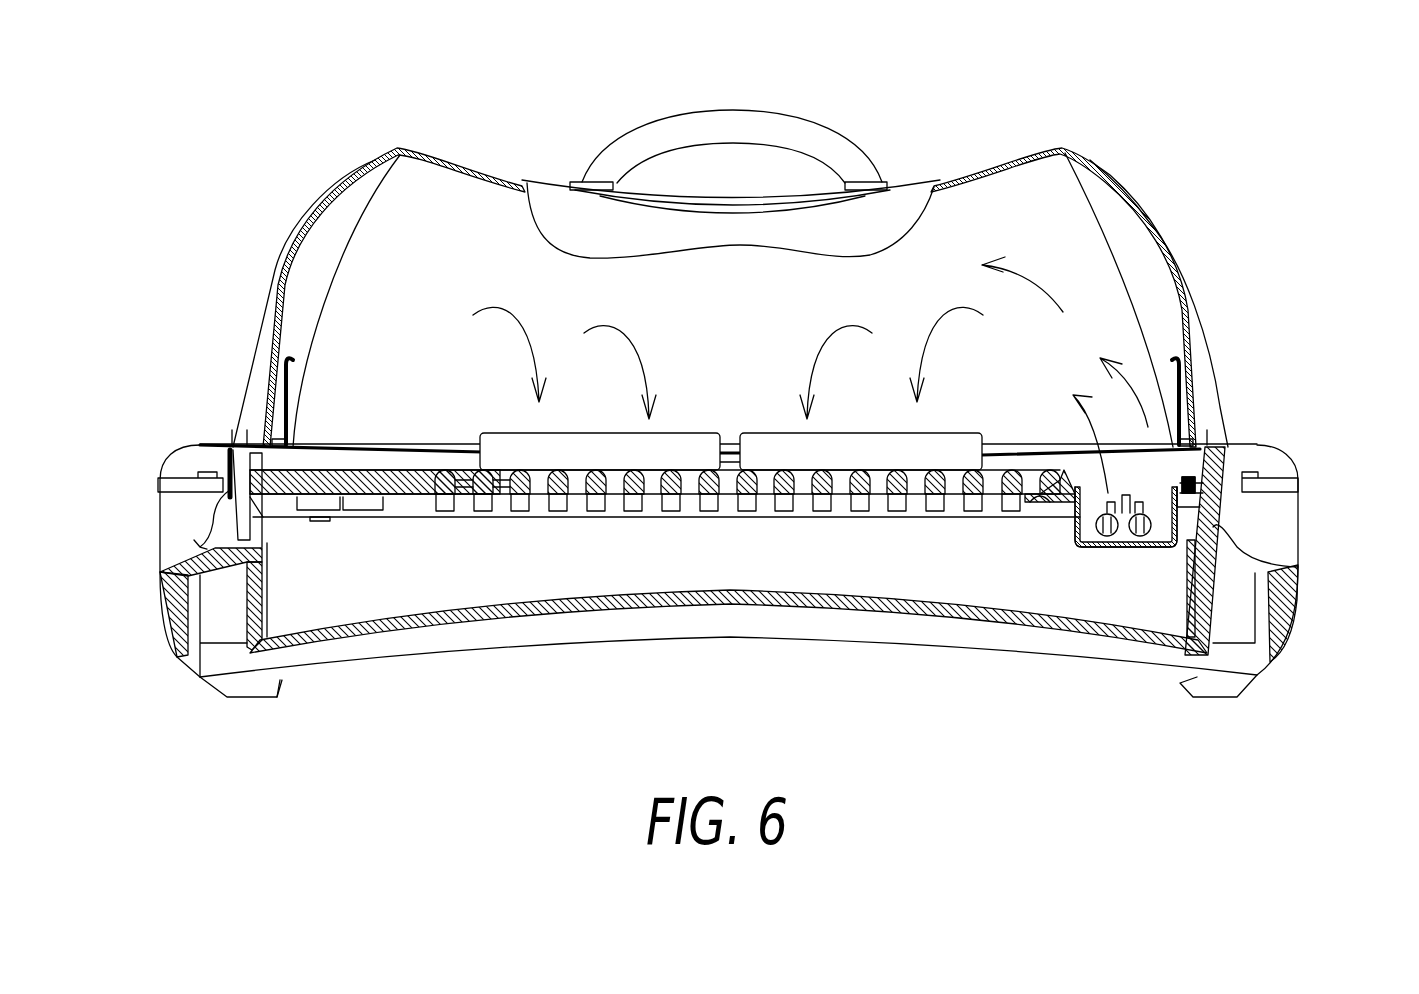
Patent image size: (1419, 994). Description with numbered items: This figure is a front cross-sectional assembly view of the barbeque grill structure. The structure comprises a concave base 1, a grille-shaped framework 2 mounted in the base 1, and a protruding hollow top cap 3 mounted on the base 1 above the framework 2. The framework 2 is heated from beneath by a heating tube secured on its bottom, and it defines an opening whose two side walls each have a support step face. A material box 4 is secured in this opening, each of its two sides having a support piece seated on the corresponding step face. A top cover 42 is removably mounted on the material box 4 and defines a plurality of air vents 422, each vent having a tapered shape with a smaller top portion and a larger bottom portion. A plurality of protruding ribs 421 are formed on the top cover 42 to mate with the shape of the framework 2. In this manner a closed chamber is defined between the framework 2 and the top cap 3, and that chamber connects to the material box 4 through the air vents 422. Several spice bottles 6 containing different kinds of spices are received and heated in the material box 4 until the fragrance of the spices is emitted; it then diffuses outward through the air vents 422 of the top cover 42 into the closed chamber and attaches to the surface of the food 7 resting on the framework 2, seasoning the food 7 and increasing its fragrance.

The concave base 1 is at (738, 597).
The grille-shaped framework 2 is at (348, 447).
The protruding hollow top cap 3 is at (467, 165).
The material box 4 is at (1130, 547).
The spice bottles 6 is at (1105, 547).
The food 7 is at (615, 447).
The top cover 42 is at (1185, 482).
The protruding ribs 421 is at (1188, 485).
The air vents 422 is at (1143, 487).